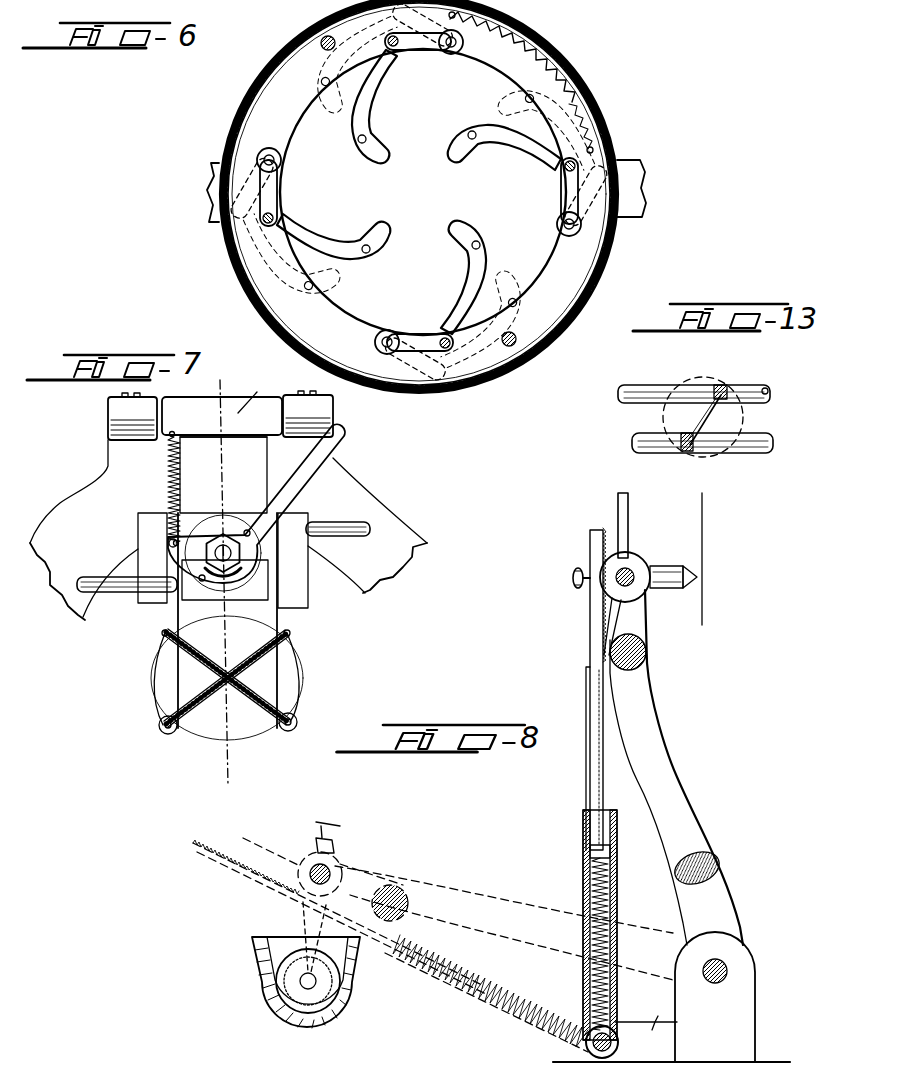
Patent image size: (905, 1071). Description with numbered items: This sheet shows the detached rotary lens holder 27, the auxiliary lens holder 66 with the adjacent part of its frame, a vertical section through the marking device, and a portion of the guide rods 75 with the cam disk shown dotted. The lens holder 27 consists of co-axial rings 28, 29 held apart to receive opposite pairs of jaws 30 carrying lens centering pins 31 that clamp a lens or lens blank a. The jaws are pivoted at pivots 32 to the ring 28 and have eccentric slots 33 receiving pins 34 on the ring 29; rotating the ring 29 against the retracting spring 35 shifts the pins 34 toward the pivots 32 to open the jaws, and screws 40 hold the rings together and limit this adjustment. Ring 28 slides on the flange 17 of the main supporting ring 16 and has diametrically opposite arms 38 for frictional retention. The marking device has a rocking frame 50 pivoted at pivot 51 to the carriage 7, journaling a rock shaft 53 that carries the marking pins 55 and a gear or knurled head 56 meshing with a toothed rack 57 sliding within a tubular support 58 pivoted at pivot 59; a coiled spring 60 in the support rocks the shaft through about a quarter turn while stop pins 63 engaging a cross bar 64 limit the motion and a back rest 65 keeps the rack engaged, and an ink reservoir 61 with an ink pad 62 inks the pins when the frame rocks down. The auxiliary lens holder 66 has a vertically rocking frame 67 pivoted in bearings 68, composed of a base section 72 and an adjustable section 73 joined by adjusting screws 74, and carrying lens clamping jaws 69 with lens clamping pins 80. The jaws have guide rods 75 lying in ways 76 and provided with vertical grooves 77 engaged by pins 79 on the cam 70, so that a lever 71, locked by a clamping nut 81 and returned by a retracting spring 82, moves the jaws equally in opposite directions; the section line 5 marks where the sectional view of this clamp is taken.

In FIG. 7, the section line 5— 5 is at (224, 583).
In FIG. 8, the carriage 7 is at (646, 1010).
In FIG. 7, the main supporting ring 16 is at (366, 594).
In FIG. 7, the flange 17 is at (421, 538).
In FIG. 6, the lens holder 27 is at (262, 268).
In FIG. 6, the ring 28 is at (557, 258).
In FIG. 6, the ring 29 is at (597, 285).
In FIG. 6, the jaws 30 is at (336, 238).
In FIG. 6, the lens centering pins 31 is at (466, 137).
In FIG. 6, the pivots 32 is at (451, 56).
In FIG. 6, the eccentric slots 33 is at (415, 52).
In FIG. 6, the pins 34 is at (386, 46).
In FIG. 6, the retracting spring 35 is at (536, 62).
In FIG. 6, the arms 38 is at (212, 194).
In FIG. 6, the screws 40 is at (325, 39).
In FIG. 8, the rocking frame 50 is at (677, 792).
In FIG. 8, the pivot 51 is at (728, 967).
In FIG. 8, the rock shaft 53 is at (634, 581).
In FIG. 8, the marking pins 55 is at (699, 576).
In FIG. 8, the gear or knurled head 56 is at (638, 558).
In FIG. 8, the toothed rack 57 is at (600, 613).
In FIG. 8, the tubular support 58 is at (583, 846).
In FIG. 8, the pivot 59 is at (587, 1050).
In FIG. 8, the coiled spring 60 is at (583, 891).
In FIG. 8, the ink reservoir 61 is at (338, 1008).
In FIG. 8, the ink pad or roller 62 is at (277, 979).
In FIG. 8, the stop pins 63 is at (618, 508).
In FIG. 8, the cross bar 64 is at (647, 656).
In FIG. 8, the back rest 65 is at (580, 567).
In FIG. 7, the auxiliary lens holder 66 is at (177, 597).
In FIG. 7, the vertically rocking frame 67 is at (242, 443).
In FIG. 7, the bearings 68 is at (108, 417).
In FIG. 7, the lens clamping jaws 69 is at (162, 635).
In FIG. 7, the cam 70 is at (231, 523).
In FIG. 13, the cam 70 is at (698, 385).
In FIG. 7, the lever 71 is at (304, 480).
In FIG. 7, the base section 72 is at (184, 400).
In FIG. 7, the adjustable section 73 is at (197, 474).
In FIG. 7, the adjusting screws 74 is at (194, 439).
In FIG. 7, the guide rods 75 is at (93, 578).
In FIG. 13, the guide rods 75 is at (760, 440).
In FIG. 7, the ways 76 is at (180, 539).
In FIG. 13, the vertical grooves 77 is at (706, 420).
In FIG. 7, the pins 79 is at (251, 536).
In FIG. 13, the pins 79 is at (722, 392).
In FIG. 7, the lens clamping pins 80 is at (227, 678).
In FIG. 7, the clamping nut 81 is at (247, 573).
In FIG. 7, the retracting spring 82 is at (167, 459).
In FIG. 7, the lens or lens blank a is at (213, 723).
In FIG. 8, the lens or lens blank a is at (704, 530).